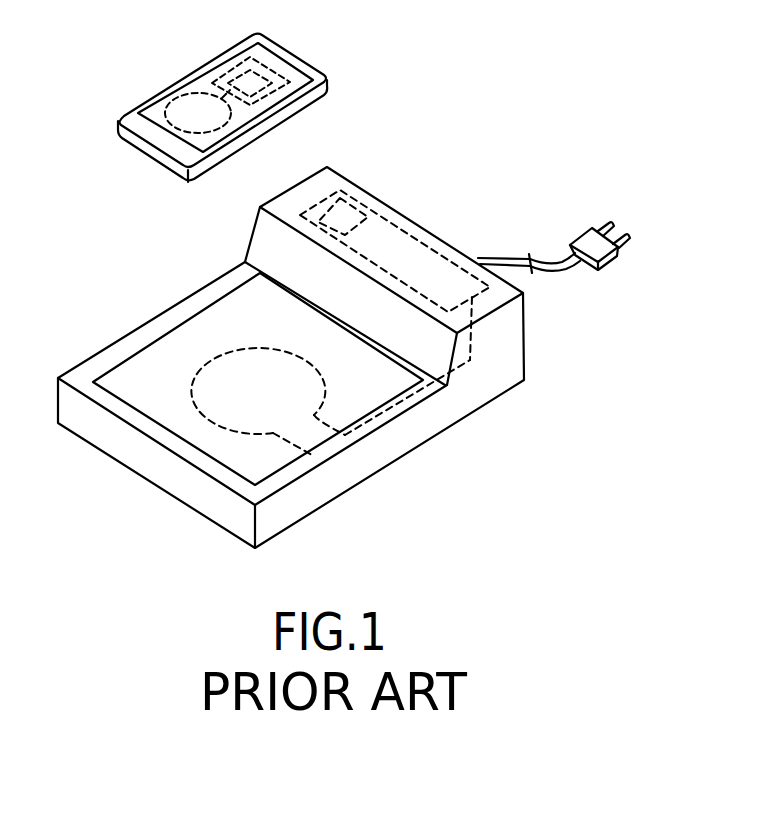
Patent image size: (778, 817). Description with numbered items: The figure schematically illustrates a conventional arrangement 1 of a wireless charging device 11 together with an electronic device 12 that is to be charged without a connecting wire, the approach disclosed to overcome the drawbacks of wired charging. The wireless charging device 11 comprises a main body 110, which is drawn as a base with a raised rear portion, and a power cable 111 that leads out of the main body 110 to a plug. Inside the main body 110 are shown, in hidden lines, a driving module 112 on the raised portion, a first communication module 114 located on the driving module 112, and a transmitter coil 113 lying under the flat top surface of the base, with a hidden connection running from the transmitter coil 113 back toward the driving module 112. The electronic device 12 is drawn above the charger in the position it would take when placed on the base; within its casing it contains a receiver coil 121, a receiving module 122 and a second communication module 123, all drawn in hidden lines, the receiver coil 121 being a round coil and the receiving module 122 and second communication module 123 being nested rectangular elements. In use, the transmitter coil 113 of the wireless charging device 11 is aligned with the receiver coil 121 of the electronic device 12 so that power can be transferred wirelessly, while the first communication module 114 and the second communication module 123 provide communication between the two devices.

The wireless charging system (prior art) 1 is at (565, 111).
The wireless charging device 11 is at (178, 292).
The main body 110 is at (127, 345).
The power cable 111 is at (565, 267).
The driving module 112 is at (423, 242).
The transmitter coil 113 is at (203, 410).
The first communication module 114 is at (352, 217).
The electronic device 12 is at (182, 80).
The receiver coil 121 is at (178, 113).
The receiving module 122 is at (262, 66).
The second communication module 123 is at (268, 88).